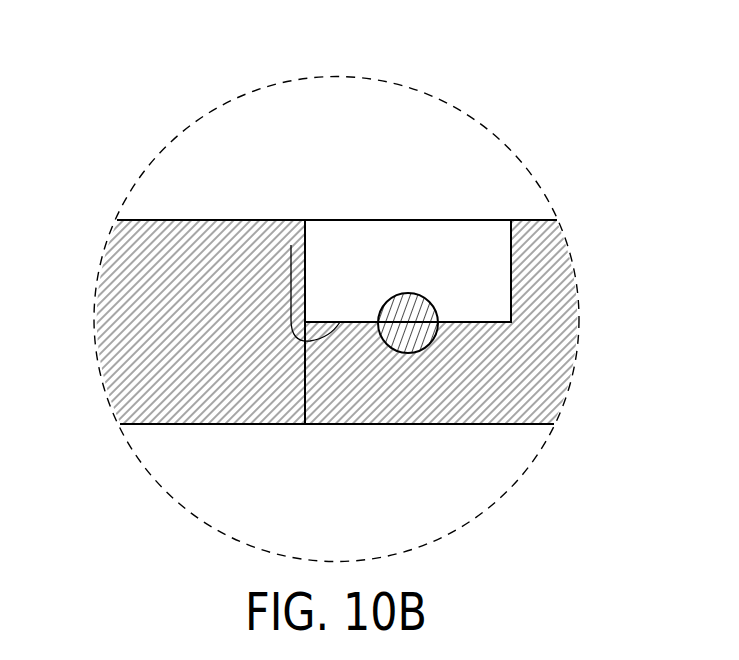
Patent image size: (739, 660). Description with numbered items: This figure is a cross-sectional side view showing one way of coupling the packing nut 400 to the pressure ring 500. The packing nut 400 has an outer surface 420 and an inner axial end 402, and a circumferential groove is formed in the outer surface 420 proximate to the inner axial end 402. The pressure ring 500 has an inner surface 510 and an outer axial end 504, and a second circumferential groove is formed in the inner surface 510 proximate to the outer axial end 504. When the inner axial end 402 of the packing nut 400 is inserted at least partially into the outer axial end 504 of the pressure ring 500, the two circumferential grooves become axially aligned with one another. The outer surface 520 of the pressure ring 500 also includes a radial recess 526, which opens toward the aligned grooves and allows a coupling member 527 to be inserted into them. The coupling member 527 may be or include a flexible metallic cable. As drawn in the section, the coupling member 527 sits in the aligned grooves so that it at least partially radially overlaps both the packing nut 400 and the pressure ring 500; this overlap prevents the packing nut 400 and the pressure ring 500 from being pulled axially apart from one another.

The packing nut 400 is at (523, 395).
The inner axial end 402 is at (305, 394).
The outer surface 420 is at (532, 220).
The pressure ring 500 is at (133, 352).
The outer axial end 504 is at (305, 373).
The inner surface 510 is at (291, 245).
The outer surface 520 is at (170, 220).
The radial recess 526 is at (378, 236).
The coupling member 527 is at (418, 333).